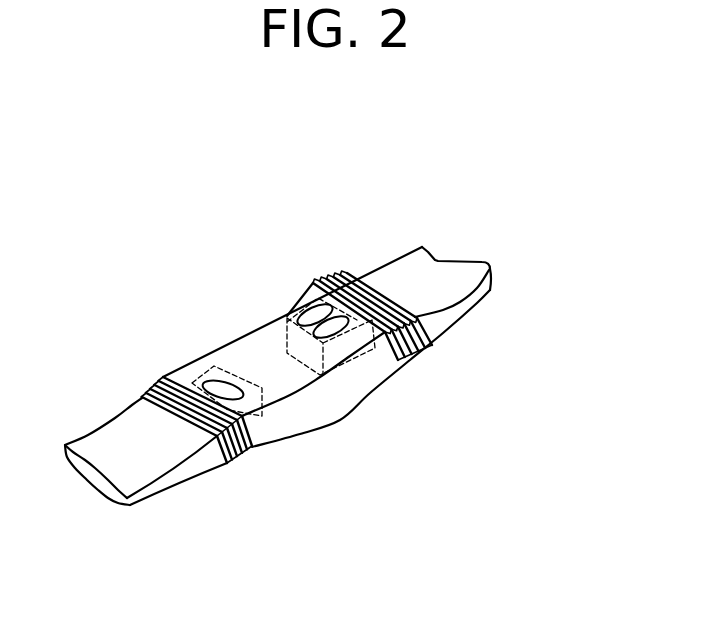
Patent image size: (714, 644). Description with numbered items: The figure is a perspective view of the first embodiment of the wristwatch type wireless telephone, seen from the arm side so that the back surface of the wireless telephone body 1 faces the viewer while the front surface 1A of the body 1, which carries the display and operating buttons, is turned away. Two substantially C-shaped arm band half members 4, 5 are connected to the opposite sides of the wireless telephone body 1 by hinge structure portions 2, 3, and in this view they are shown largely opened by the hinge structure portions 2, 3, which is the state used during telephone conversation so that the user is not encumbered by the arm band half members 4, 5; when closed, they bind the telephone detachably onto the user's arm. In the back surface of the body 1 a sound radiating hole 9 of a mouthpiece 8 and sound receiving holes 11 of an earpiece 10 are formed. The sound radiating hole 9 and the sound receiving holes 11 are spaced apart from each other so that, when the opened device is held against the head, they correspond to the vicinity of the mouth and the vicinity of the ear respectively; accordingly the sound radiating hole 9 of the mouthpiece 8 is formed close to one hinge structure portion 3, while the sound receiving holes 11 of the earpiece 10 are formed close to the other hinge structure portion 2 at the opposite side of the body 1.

The wireless telephone body 1 is at (285, 434).
The surface 1A is at (346, 416).
The hinge structure portion 2 is at (420, 352).
The hinge structure portion 3 is at (242, 461).
The arm band half member 4 is at (462, 310).
The arm band half member 5 is at (172, 483).
The mouthpiece 8 is at (190, 387).
The sound radiating hole 9 is at (213, 383).
The earpiece 10 is at (288, 322).
The sound receiving holes 11 is at (338, 303).